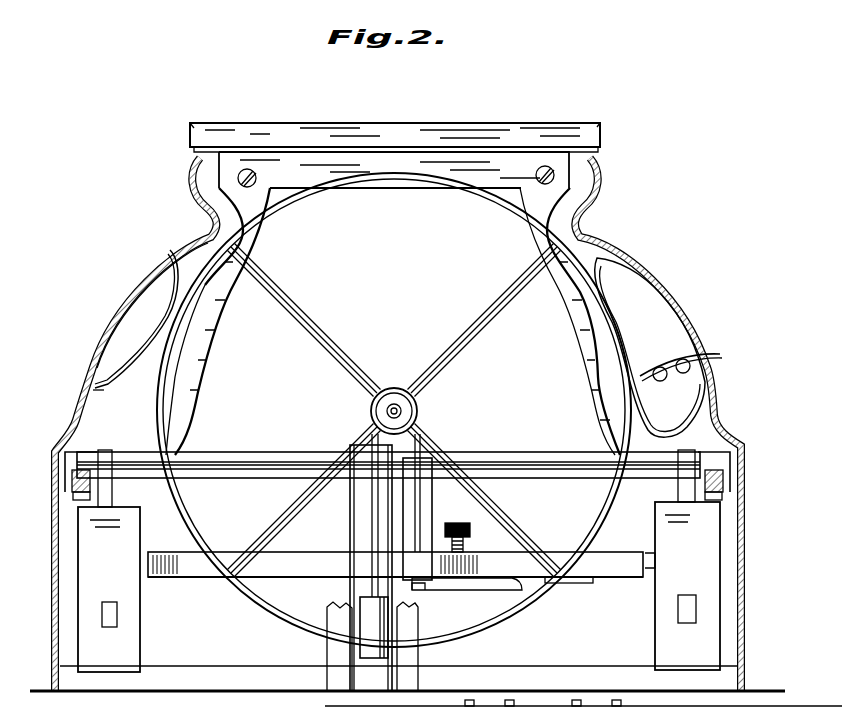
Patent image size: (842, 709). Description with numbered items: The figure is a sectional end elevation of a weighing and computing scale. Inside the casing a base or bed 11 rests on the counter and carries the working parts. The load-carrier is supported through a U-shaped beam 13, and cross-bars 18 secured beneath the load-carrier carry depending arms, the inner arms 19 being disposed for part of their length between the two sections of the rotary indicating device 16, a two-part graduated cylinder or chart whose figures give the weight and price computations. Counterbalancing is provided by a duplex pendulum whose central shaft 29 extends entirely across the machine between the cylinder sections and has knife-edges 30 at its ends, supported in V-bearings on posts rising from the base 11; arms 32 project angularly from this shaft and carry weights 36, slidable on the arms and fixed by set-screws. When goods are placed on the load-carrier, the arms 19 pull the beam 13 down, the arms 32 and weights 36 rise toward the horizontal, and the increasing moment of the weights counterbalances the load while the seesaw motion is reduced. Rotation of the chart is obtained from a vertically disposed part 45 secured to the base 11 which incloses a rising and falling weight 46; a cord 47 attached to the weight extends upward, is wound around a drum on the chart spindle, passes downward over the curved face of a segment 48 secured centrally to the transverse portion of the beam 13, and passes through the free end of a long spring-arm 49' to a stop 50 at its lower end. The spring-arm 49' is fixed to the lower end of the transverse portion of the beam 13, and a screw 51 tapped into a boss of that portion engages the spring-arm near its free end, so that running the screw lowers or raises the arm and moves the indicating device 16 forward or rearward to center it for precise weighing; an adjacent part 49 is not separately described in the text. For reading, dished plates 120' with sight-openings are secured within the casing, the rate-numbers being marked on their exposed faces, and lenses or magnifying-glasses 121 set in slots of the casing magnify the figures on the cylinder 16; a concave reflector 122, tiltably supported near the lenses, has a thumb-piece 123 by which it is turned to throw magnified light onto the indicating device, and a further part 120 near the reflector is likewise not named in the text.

The base or bed 11 is at (436, 684).
The beam 13 is at (197, 576).
The indicating device 16 is at (510, 618).
The cross-bars 18 is at (403, 176).
The inner arms 19 is at (200, 368).
The body or shaft of the pendulum 29 is at (548, 441).
The knife-edges 30 is at (72, 477).
The arms or branches 32 is at (393, 625).
The weights 36 is at (399, 561).
The bar 45 is at (352, 590).
The rising and falling weight 46 is at (367, 628).
The cord 47 is at (395, 400).
The segment 48 is at (432, 507).
The column 49 is at (347, 562).
The spring-arm 49' is at (467, 598).
The stop 50 is at (417, 588).
The screw 51 is at (465, 540).
The loop 120 is at (650, 347).
The dished plates 120' is at (415, 329).
The magnifying-glasses 121 is at (110, 316).
The reflector 122 is at (672, 383).
The thumb-piece 123 is at (712, 362).